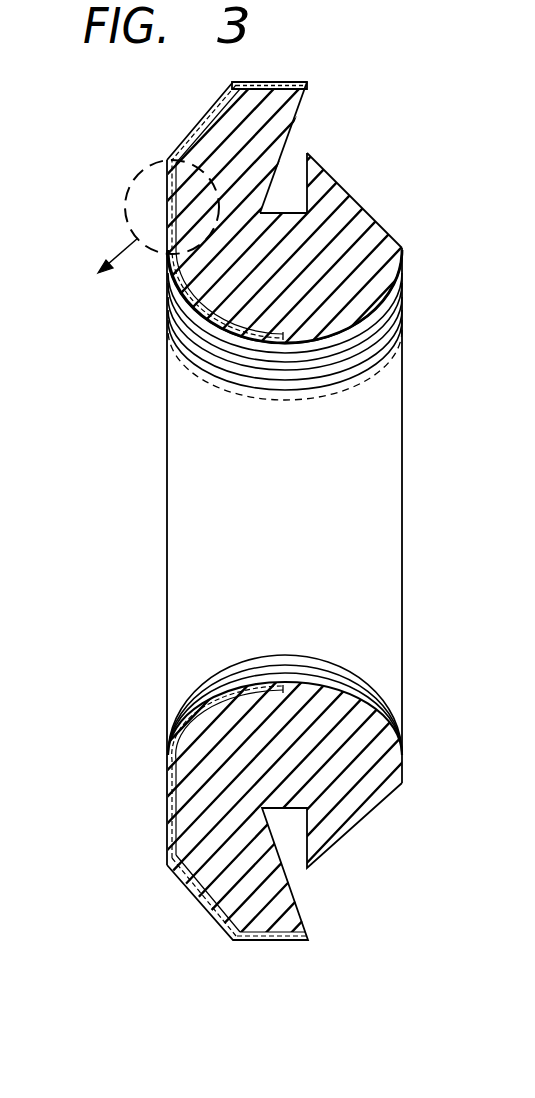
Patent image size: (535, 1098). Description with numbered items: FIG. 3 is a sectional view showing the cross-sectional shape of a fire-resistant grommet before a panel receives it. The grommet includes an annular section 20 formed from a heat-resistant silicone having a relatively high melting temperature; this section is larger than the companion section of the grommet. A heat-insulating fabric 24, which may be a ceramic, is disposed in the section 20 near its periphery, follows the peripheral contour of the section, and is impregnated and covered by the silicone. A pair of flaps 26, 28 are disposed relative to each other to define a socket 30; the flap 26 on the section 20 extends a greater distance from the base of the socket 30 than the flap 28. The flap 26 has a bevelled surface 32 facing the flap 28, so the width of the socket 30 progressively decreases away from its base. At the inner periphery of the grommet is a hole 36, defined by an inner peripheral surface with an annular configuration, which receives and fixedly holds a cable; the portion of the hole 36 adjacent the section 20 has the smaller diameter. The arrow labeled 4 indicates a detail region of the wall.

The detail view arrow (FIG. 4) 4 is at (100, 272).
The section 20 is at (222, 287).
The fabric 24 is at (160, 212).
The flap 26 is at (277, 123).
The flap 28 is at (323, 182).
The socket 30 is at (295, 213).
The bevelled surface 32 is at (287, 143).
The hole 36 is at (300, 345).